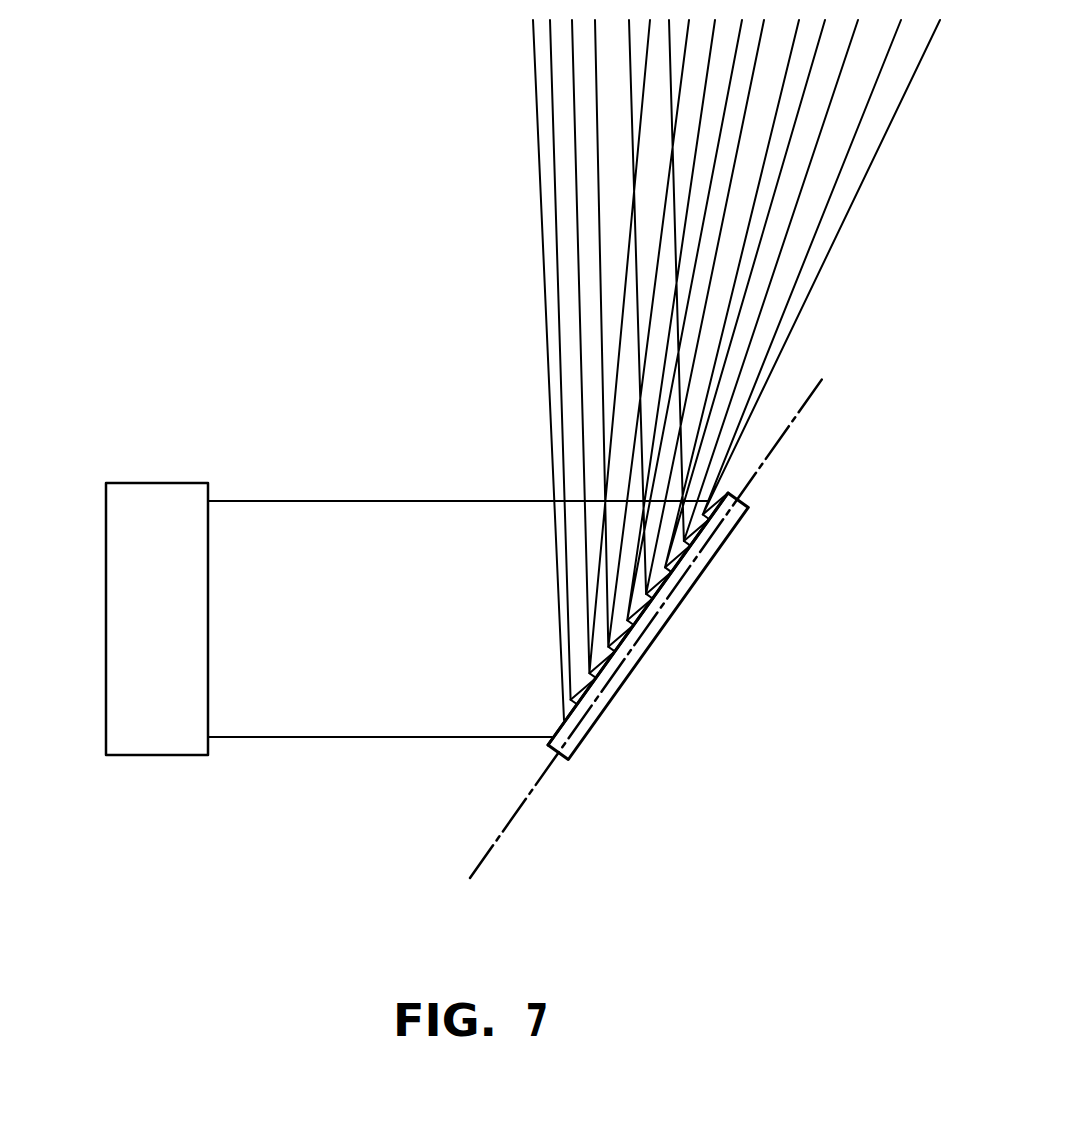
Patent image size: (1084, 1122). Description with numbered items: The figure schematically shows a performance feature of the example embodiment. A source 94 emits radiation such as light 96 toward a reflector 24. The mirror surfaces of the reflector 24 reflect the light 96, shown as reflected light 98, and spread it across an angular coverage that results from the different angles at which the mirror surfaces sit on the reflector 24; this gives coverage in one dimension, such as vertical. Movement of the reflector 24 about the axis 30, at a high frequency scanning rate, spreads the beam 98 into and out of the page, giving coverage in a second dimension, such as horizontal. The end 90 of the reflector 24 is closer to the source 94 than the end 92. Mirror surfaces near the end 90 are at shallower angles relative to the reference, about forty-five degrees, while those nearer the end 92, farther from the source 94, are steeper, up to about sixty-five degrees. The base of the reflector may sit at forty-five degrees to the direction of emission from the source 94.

The reflector 24 is at (650, 625).
The axis 30 is at (480, 865).
The end of the reflector 90 is at (557, 768).
The end of the reflector 92 is at (743, 503).
The source 94 is at (128, 682).
The light 96 is at (270, 700).
The reflected light 98 is at (517, 164).